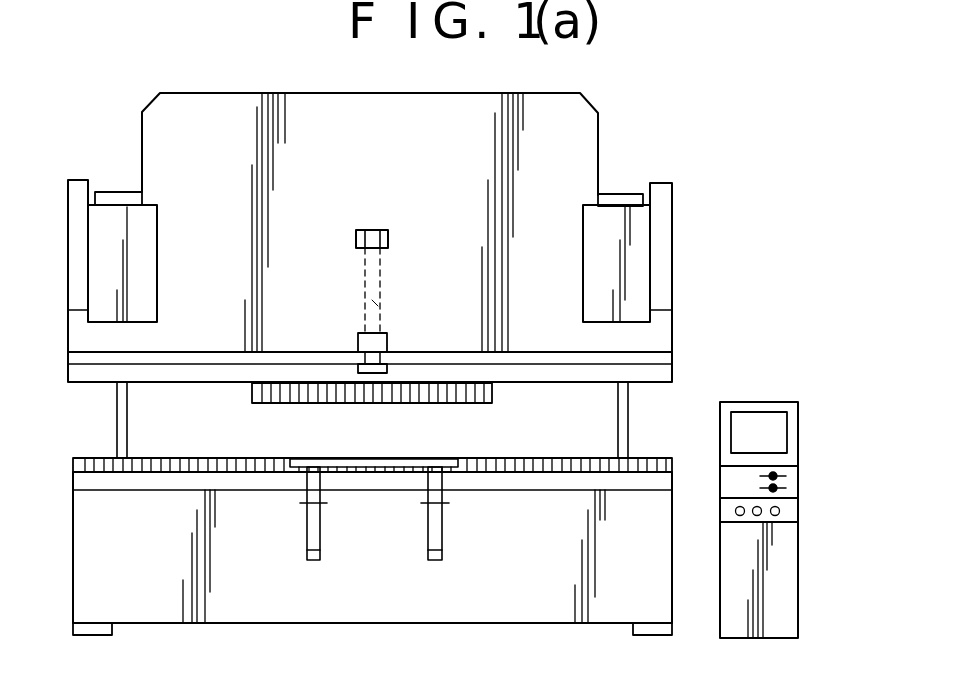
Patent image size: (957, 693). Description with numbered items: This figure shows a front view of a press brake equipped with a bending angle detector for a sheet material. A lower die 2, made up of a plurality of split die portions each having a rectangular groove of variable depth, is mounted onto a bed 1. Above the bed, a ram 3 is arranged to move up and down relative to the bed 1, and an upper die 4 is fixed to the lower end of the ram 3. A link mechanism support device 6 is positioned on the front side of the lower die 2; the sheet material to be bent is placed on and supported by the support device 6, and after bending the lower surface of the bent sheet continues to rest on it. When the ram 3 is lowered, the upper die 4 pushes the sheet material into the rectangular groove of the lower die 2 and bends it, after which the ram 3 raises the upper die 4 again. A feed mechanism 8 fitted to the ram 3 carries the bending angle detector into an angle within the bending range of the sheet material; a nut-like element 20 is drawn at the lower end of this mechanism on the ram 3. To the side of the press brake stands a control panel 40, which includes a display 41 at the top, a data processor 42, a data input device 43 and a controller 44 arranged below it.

The bed 1 is at (520, 597).
The lower die 2 is at (510, 461).
The ram 3 is at (575, 153).
The upper die 4 is at (473, 405).
The link mechanism support device 6 is at (437, 537).
The feed mechanism 8 is at (375, 303).
The nut 20 is at (393, 343).
The control panel 40 is at (802, 530).
The display 41 is at (772, 433).
The data processor 42 is at (798, 485).
The data input device 43 is at (798, 513).
The controller 44 is at (806, 621).